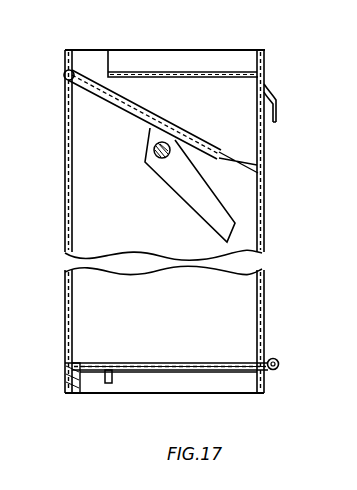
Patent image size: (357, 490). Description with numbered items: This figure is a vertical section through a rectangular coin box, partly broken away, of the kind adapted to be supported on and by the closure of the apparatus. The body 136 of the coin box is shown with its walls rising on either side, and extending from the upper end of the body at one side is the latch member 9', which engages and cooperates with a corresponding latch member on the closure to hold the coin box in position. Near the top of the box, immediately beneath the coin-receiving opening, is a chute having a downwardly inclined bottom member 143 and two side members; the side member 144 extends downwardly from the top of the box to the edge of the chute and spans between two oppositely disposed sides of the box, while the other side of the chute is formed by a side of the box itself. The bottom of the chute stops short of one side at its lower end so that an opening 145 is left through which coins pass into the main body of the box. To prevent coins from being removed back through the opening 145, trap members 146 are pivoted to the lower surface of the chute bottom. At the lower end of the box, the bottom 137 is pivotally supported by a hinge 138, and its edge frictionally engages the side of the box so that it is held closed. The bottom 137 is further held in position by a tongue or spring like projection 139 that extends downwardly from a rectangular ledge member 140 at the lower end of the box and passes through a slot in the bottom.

The body 136 is at (264, 205).
The side member 144 is at (88, 62).
The latch member 9' is at (287, 103).
The bottom member 143 is at (152, 115).
The opening 145 is at (244, 167).
The trap members 146 is at (200, 200).
The rectangular ledge member 140 is at (138, 362).
The bottom 137 is at (152, 372).
The hinge 138 is at (280, 360).
The tongue or spring like projection 139 is at (108, 384).